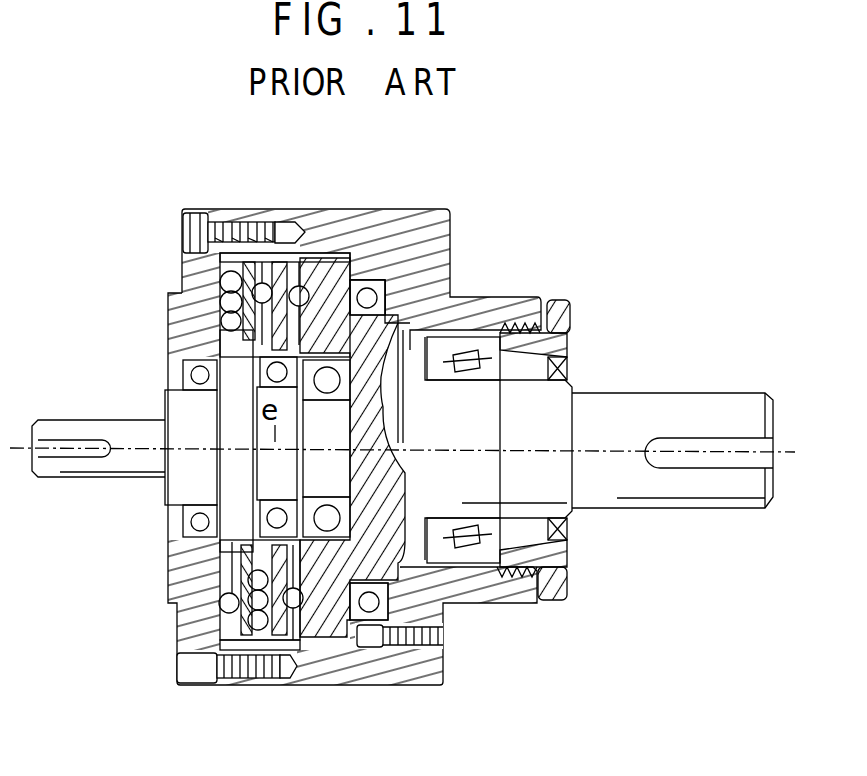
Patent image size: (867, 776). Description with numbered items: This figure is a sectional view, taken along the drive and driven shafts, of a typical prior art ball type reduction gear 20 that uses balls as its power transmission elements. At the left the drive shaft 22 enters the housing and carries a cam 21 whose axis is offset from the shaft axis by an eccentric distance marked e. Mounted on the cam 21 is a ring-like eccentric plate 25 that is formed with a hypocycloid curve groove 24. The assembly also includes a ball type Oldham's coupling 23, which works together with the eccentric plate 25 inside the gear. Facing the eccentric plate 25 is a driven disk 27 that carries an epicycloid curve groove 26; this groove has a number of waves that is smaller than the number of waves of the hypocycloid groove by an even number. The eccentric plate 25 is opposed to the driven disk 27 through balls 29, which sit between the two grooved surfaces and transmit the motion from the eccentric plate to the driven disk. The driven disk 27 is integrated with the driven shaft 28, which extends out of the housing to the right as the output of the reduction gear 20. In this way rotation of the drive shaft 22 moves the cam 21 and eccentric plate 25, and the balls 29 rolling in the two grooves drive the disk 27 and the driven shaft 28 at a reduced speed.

The reduction gear 20 is at (492, 270).
The cam 21 is at (257, 483).
The drive shaft 22 is at (80, 480).
The ball type Oldham's coupling 23 is at (240, 570).
The hypocycloid curve groove 24 is at (276, 600).
The eccentric plate 25 is at (270, 605).
The epicycloid curve groove 26 is at (285, 282).
The driven disk 27 is at (335, 252).
The driven shaft 28 is at (667, 392).
The balls 29 is at (300, 600).